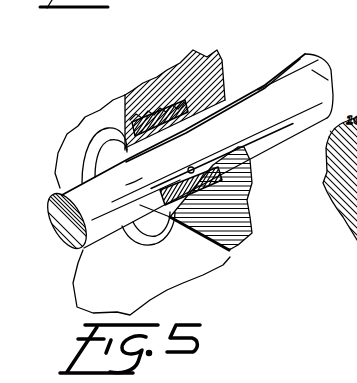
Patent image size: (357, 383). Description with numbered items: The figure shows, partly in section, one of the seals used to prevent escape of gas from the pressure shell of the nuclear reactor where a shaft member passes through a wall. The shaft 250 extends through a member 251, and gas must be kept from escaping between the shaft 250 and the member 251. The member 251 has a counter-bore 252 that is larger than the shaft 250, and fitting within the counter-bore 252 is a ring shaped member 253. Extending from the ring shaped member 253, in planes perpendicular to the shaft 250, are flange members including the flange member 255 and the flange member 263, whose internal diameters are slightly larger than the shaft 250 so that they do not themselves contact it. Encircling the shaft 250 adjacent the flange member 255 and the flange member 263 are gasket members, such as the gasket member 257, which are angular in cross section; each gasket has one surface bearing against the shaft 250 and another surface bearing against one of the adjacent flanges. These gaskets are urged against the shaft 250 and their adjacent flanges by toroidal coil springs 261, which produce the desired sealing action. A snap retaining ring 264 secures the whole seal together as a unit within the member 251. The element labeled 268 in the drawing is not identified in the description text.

The shaft 250 is at (260, 88).
The member 251 is at (205, 53).
The counter-bore 252 is at (228, 256).
The ring shaped member 253 is at (213, 182).
The flange member 255 is at (188, 170).
The gasket member 257 is at (203, 156).
The toroidal coil springs 261 is at (187, 155).
The flange member 263 is at (133, 240).
The snap retaining ring 264 is at (188, 133).
The groove 268 is at (120, 185).